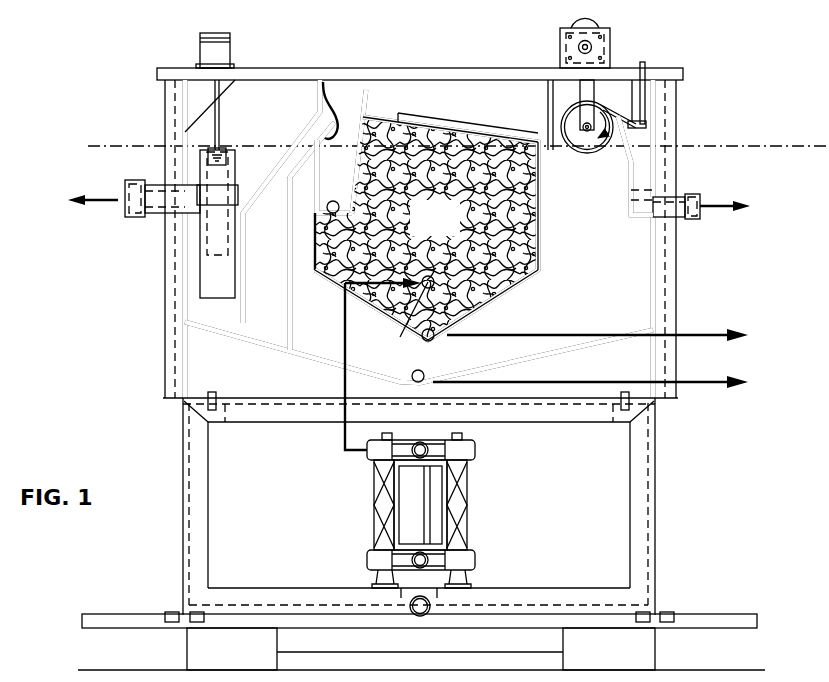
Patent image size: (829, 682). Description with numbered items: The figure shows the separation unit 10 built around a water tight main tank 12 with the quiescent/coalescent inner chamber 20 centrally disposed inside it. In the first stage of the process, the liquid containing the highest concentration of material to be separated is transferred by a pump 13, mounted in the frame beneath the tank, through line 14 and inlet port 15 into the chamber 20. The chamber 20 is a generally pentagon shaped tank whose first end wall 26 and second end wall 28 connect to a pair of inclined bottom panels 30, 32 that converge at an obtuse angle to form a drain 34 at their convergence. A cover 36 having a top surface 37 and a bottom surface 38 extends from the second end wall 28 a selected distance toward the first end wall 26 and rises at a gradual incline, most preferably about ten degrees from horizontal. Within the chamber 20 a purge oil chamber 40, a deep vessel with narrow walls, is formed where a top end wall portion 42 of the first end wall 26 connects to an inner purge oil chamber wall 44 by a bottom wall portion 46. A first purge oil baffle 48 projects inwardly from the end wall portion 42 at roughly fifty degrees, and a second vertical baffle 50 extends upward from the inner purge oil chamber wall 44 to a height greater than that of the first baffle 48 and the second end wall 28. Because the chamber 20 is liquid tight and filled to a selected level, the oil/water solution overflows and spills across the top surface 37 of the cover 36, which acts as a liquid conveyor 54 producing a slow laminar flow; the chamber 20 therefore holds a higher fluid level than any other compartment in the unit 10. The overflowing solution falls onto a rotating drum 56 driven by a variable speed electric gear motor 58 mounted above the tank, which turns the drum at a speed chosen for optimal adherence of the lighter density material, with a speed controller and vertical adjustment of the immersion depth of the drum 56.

The unit 10 is at (730, 127).
The main tank 12 is at (660, 268).
The pump 13 is at (421, 531).
The line 14 is at (343, 402).
The port 15 is at (402, 324).
The quiescent/coalescent chamber 20 is at (426, 228).
The first end wall 26 is at (308, 258).
The second end wall 28 is at (543, 243).
The inclined bottom panel 30 is at (370, 320).
The inclined bottom panel 32 is at (395, 110).
The drain 34 is at (436, 336).
The cover 36 is at (524, 133).
The top surface 37 is at (450, 126).
The bottom surface 38 is at (487, 130).
The purge oil chamber 40 is at (345, 151).
The top end wall portion 42 is at (312, 196).
The inner purge oil chamber wall 44 is at (287, 175).
The bottom wall portion 46 is at (312, 222).
The first purge oil baffle 48 is at (320, 81).
The second vertical baffle 50 is at (352, 95).
The liquid conveyor 54 is at (428, 113).
The rotating drum 56 is at (590, 160).
The variable speed electric motor 58 is at (614, 29).